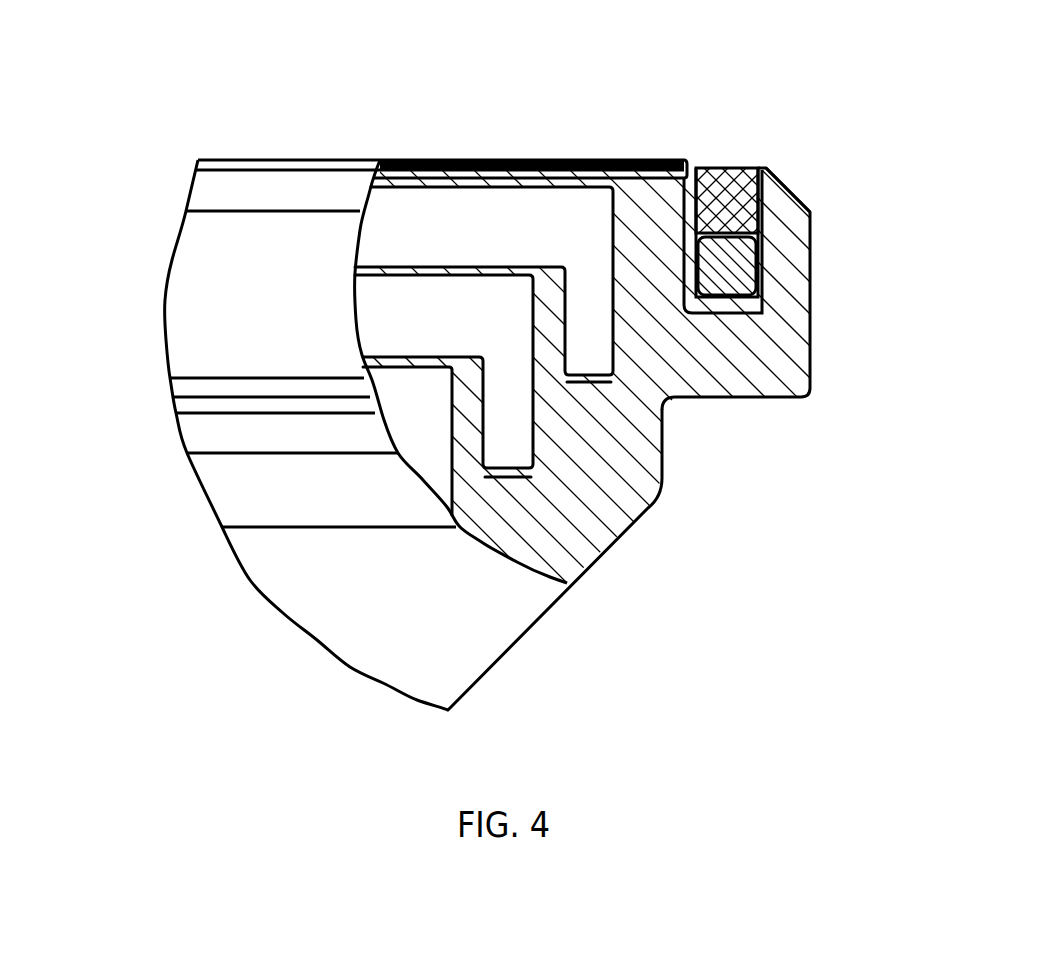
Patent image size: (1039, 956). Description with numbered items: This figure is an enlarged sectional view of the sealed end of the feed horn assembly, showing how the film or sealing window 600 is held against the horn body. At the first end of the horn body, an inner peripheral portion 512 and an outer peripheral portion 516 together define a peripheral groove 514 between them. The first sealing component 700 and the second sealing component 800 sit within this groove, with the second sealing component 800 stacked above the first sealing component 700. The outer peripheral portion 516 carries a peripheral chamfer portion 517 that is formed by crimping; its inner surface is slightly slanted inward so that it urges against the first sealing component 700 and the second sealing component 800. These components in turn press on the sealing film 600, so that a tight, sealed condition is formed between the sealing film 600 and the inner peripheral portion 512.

The sealing window 600 is at (338, 160).
The inner peripheral portion 512 is at (645, 310).
The peripheral groove 514 is at (725, 335).
The outer peripheral portion 516 is at (785, 308).
The peripheral chamfer portion 517 is at (805, 177).
The first sealing component 700 is at (742, 278).
The second sealing component 800 is at (736, 215).